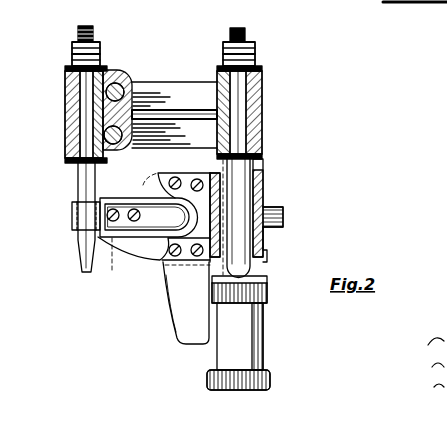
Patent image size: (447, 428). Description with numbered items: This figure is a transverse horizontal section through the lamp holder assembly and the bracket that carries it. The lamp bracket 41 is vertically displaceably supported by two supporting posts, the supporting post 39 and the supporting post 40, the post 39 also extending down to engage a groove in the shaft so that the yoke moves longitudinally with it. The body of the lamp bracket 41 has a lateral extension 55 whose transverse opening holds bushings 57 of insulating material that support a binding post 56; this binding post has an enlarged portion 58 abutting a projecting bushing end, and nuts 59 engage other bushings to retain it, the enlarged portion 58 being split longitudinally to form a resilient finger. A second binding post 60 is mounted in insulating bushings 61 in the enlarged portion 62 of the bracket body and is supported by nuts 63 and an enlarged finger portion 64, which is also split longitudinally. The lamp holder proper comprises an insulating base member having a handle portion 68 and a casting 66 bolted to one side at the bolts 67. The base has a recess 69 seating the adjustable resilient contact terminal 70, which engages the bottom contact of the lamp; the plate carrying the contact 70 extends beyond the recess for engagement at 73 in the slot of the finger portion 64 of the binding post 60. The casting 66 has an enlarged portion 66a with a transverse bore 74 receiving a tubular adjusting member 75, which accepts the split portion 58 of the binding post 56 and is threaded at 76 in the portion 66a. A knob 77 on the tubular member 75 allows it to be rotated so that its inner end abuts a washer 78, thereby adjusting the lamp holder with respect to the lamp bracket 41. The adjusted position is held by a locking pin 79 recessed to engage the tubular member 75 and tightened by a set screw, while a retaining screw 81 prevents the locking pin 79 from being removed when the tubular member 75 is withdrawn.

The supporting post 39 is at (80, 150).
The supporting post 40 is at (118, 80).
The lamp bracket 41 is at (66, 126).
The lateral extension 55 is at (152, 86).
The binding post 56 is at (262, 120).
The bushing 57 is at (217, 80).
The enlarged portion 58 is at (263, 196).
The nut 59 is at (256, 49).
The second binding post 60 is at (81, 98).
The insulating bushing 61 is at (67, 70).
The enlarged portion 62 is at (165, 172).
The nut 63 is at (96, 42).
The enlarged finger portion 64 is at (76, 262).
The casting 66 is at (208, 172).
The enlarged portion 66a is at (263, 182).
The bolt 67 is at (146, 283).
The handle portion 68 is at (172, 318).
The recess 69 is at (108, 273).
The resilient contact terminal 70 is at (162, 203).
The engagement 73 is at (70, 225).
The transverse bore 74 is at (221, 239).
The adjusting member 75 is at (266, 250).
The threads 76 is at (264, 184).
The knob 77 is at (271, 346).
The washer 78 is at (216, 149).
The locking pin 79 is at (341, 185).
The retaining screw 81 is at (284, 214).